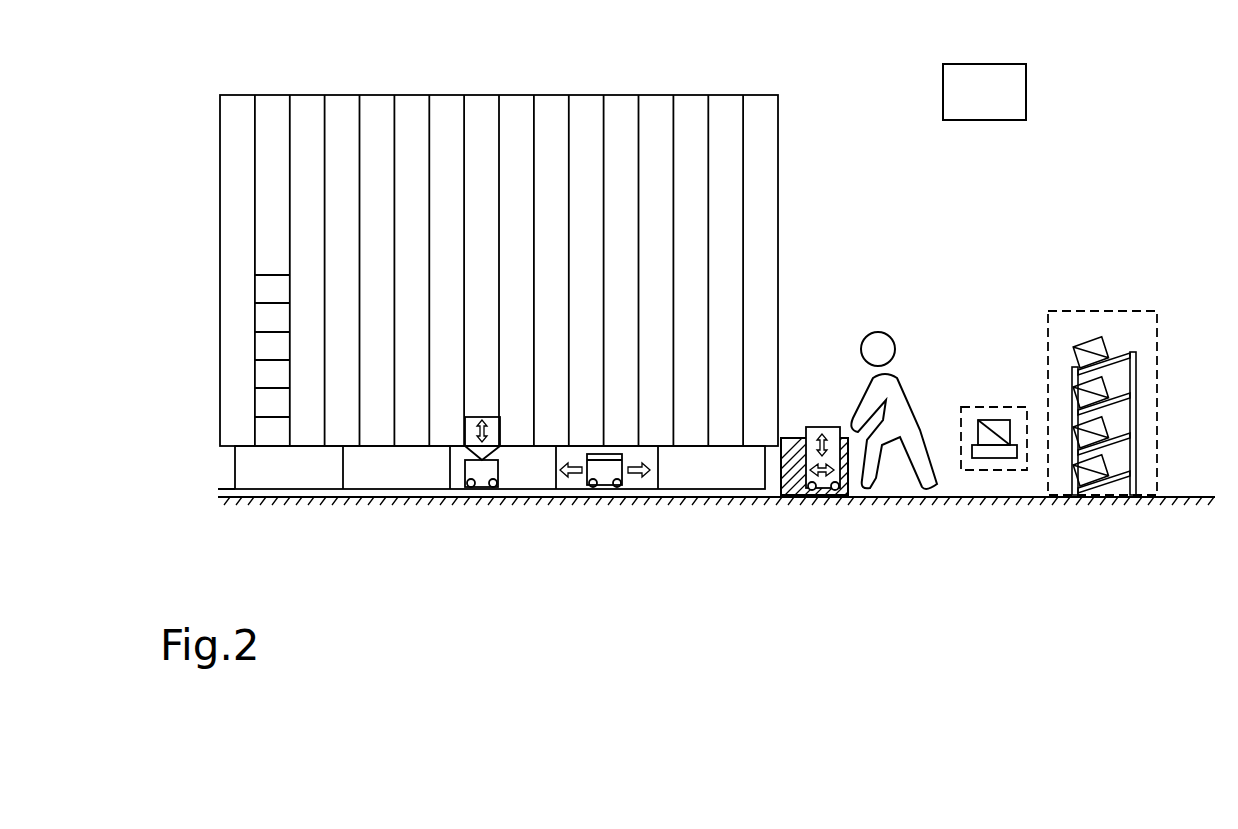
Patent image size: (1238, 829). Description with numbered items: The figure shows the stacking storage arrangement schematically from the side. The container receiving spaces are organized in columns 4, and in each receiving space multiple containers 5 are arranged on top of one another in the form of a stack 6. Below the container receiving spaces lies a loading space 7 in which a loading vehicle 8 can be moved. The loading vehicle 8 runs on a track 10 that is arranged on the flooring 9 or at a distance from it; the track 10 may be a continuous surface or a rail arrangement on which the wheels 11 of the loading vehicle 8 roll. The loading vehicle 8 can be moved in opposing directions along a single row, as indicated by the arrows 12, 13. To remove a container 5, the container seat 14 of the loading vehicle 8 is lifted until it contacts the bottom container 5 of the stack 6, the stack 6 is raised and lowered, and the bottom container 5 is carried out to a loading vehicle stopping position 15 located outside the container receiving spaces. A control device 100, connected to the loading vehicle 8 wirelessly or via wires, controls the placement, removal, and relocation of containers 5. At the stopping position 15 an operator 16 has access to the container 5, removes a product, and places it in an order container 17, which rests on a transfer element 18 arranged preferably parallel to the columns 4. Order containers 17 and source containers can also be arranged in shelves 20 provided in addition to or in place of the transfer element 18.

The control device 100 is at (1003, 106).
The columns 4 is at (272, 113).
The containers 5 is at (814, 432).
The stack 6 is at (260, 292).
The loading space 7 is at (305, 493).
The loading vehicle 8 is at (481, 482).
The flooring 9 is at (395, 500).
The track 10 is at (420, 490).
The wheels 11 is at (492, 488).
The arrow 12 is at (572, 478).
The arrow 13 is at (637, 480).
The container seat 14 is at (622, 456).
The loading vehicle stopping position 15 is at (790, 480).
The operator 16 is at (873, 492).
The order container 17 is at (1010, 433).
The transfer element 18 is at (983, 453).
The shelves 20 is at (1131, 392).